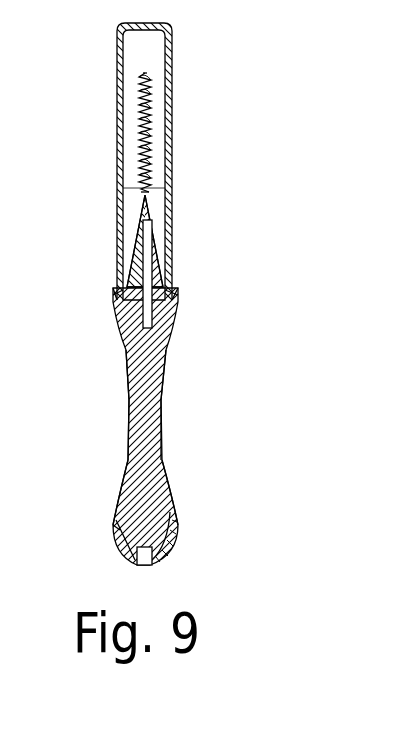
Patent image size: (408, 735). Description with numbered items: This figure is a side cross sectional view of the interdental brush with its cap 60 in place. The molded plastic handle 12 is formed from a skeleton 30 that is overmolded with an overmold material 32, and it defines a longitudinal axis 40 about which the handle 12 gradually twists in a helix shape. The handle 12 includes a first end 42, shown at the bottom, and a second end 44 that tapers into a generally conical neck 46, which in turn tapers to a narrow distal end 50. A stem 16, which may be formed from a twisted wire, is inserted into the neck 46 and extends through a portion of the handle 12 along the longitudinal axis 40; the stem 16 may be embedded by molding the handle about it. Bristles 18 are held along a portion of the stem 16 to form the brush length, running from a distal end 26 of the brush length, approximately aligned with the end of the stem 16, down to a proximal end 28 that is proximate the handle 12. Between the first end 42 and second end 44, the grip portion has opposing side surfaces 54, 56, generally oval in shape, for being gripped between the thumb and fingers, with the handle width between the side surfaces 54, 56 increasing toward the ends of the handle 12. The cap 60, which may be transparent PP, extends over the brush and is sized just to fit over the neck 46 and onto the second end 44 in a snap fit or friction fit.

The handle 12 is at (150, 390).
The stem 16 is at (158, 283).
The bristles 18 is at (148, 88).
The distal end of the brush length 26 is at (140, 83).
The proximal end of the brush length 28 is at (122, 190).
The skeleton 30 is at (150, 483).
The overmold material 32 is at (170, 548).
The longitudinal axis 40 is at (150, 325).
The first end 42 is at (137, 562).
The second end 44 is at (118, 256).
The neck 46 is at (150, 238).
The narrow distal end 50 is at (148, 192).
The side surface 54 is at (127, 418).
The side surface 56 is at (161, 440).
The cap 60 is at (172, 56).